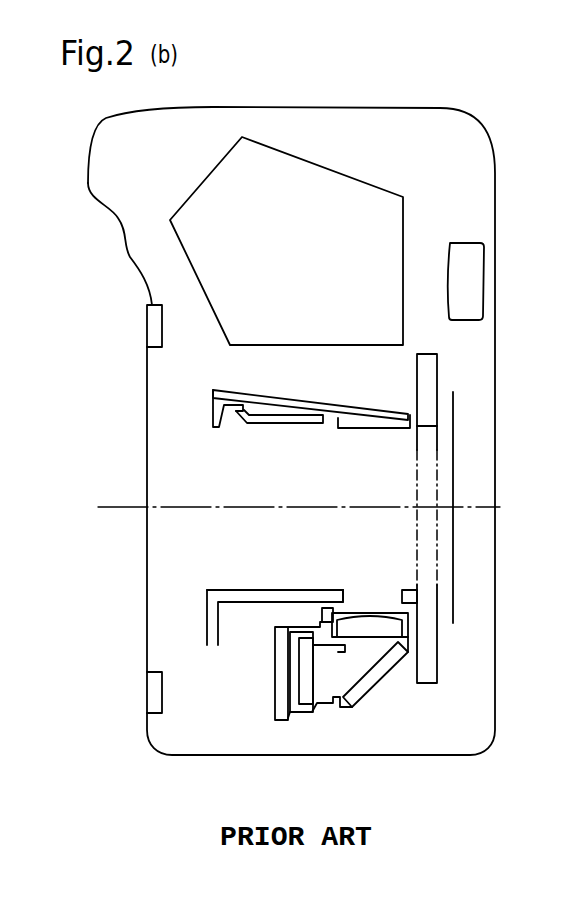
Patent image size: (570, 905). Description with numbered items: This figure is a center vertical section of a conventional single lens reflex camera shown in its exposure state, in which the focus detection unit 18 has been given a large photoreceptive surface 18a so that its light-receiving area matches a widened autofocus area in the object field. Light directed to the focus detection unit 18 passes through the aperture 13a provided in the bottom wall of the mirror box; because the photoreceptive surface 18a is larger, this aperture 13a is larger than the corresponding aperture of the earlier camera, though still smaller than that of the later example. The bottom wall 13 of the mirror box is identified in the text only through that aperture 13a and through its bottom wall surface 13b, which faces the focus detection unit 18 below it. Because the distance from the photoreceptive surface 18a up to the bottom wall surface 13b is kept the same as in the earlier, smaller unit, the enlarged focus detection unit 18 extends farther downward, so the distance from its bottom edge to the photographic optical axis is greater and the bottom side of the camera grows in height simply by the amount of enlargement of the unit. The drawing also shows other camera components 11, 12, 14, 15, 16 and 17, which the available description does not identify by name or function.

The display panel 11 is at (333, 408).
The circuit board 12 is at (270, 425).
The shield plate 13 is at (257, 602).
The aperture 13a is at (370, 602).
The bottom wall surface of the mirror box 13b is at (252, 588).
The opening 14 is at (332, 170).
The finder window 15 is at (472, 253).
The flash unit 16 is at (432, 367).
The partition plate 17 is at (455, 403).
The focus detection unit 18 is at (375, 690).
The photoreceptive surface 18a is at (383, 613).